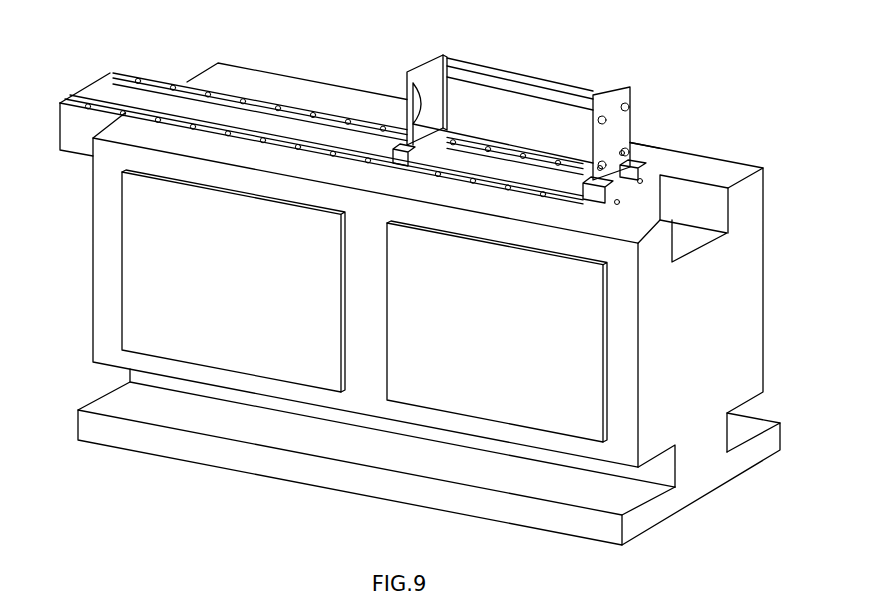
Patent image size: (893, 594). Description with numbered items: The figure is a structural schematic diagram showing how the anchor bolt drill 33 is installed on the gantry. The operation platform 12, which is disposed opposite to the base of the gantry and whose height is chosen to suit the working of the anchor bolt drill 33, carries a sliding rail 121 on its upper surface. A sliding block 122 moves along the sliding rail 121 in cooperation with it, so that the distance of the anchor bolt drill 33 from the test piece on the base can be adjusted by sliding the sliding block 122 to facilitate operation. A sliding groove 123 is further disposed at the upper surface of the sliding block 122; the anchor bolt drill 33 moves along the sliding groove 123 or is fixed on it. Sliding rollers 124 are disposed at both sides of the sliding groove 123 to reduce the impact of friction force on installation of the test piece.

The operation platform 12 is at (313, 484).
The sliding rail 121 is at (703, 248).
The sliding block 122 is at (80, 137).
The sliding groove 123 is at (262, 98).
The sliding roller 124 is at (137, 77).
The anchor bolt drill 33 is at (540, 80).